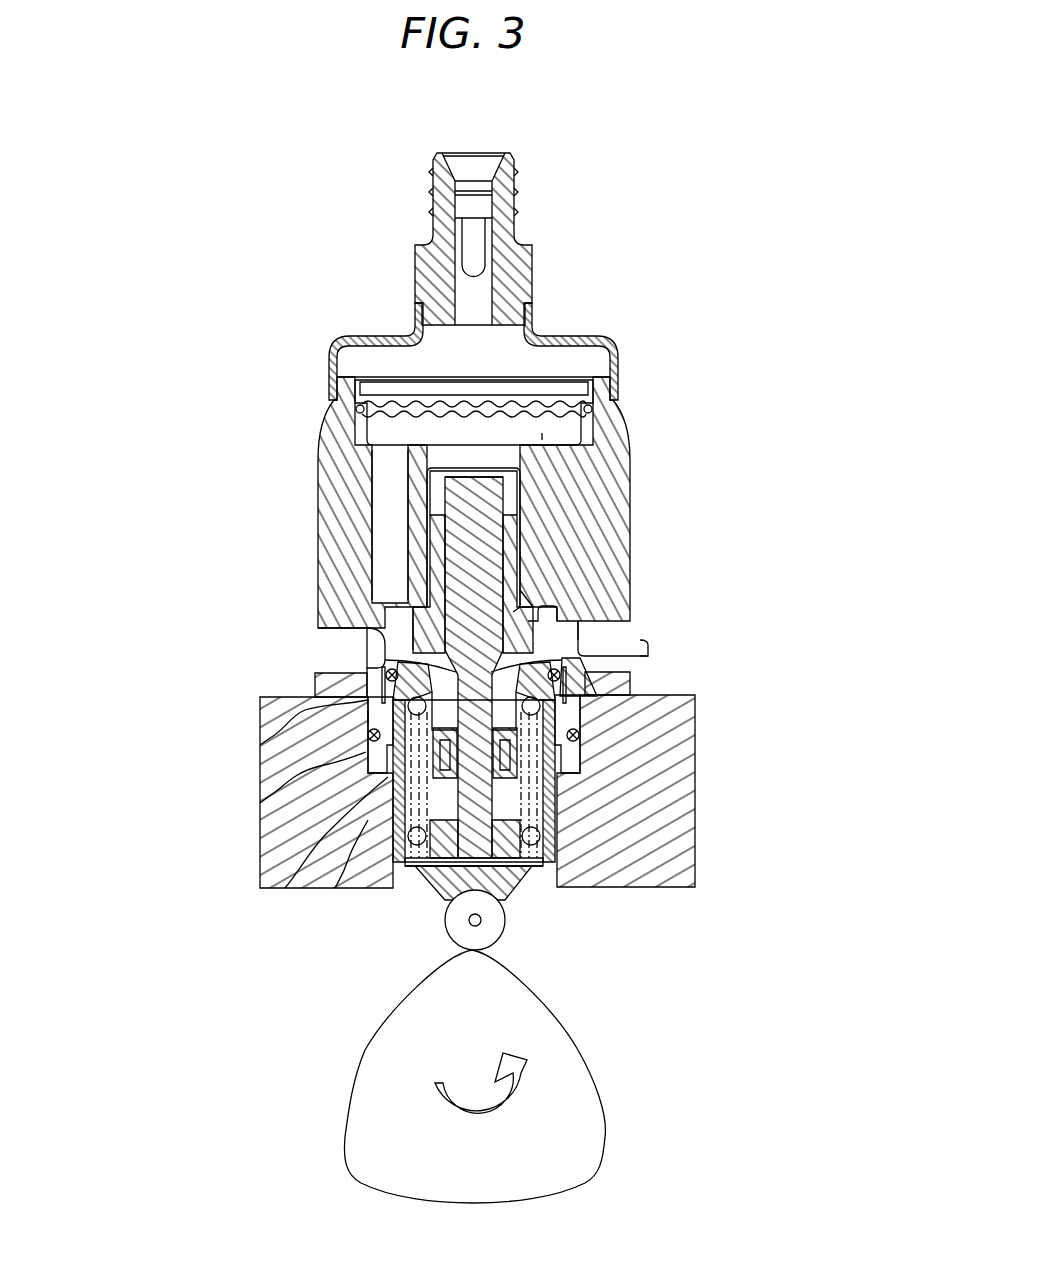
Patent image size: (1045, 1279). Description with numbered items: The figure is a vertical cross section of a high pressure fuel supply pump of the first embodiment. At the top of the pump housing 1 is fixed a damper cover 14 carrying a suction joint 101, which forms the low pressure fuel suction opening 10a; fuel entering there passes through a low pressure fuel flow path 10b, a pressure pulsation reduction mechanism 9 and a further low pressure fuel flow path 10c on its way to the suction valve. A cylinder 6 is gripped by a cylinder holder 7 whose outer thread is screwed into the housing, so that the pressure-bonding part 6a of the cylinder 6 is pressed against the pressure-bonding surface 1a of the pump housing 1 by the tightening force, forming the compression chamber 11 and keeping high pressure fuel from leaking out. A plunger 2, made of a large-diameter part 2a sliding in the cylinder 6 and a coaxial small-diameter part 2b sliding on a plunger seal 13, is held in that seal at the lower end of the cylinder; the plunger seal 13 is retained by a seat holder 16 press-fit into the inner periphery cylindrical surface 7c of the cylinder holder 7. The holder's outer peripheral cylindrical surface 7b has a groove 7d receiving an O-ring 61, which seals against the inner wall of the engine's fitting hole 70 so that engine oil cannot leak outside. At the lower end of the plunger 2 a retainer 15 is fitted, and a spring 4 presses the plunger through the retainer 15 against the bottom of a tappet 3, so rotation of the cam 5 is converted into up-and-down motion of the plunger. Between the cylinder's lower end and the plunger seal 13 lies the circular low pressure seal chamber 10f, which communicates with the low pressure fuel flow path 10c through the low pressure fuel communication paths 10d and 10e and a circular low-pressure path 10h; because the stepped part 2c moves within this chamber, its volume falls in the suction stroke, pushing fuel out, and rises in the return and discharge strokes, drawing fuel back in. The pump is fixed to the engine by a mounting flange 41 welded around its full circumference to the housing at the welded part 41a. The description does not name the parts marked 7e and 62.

The pump housing 1 is at (615, 425).
The pressure-bonding surface 1a is at (580, 617).
The plunger 2 is at (470, 650).
The large-diameter part 2a is at (468, 575).
The small-diameter part 2b is at (420, 866).
The stepped part 2c is at (388, 598).
The tappet 3 is at (523, 890).
The spring 4 is at (478, 803).
The cam 5 is at (537, 1054).
The cylinder 6 is at (527, 595).
The pressure-bonding part 6a is at (513, 612).
The cylinder holder 7 is at (630, 665).
The outer peripheral cylindrical surface 7b is at (582, 714).
The inner periphery cylindrical surface 7c is at (520, 710).
The groove 7d is at (372, 717).
The fastening screw 7e is at (388, 652).
The pressure pulsation reduction mechanism 9 is at (457, 473).
The low pressure fuel suction opening 10a is at (455, 172).
The low pressure fuel flow path 10b is at (533, 360).
The low pressure fuel flow path 10c is at (542, 433).
The low pressure fuel communication path 10d is at (390, 520).
The low pressure fuel communication path 10e is at (388, 632).
The circular low pressure seal chamber 10f is at (393, 642).
The circular low-pressure path 10h is at (645, 650).
The compression chamber 11 is at (385, 505).
The plunger seal 13 is at (567, 775).
The damper cover 14 is at (345, 380).
The retainer 15 is at (563, 860).
The seat holder 16 is at (417, 798).
The mounting flange 41 is at (318, 683).
The welded part 41a is at (305, 712).
The O-ring 61 is at (376, 737).
The screw 62 is at (386, 673).
The fitting hole 70 is at (517, 772).
The suction joint 101 is at (518, 275).